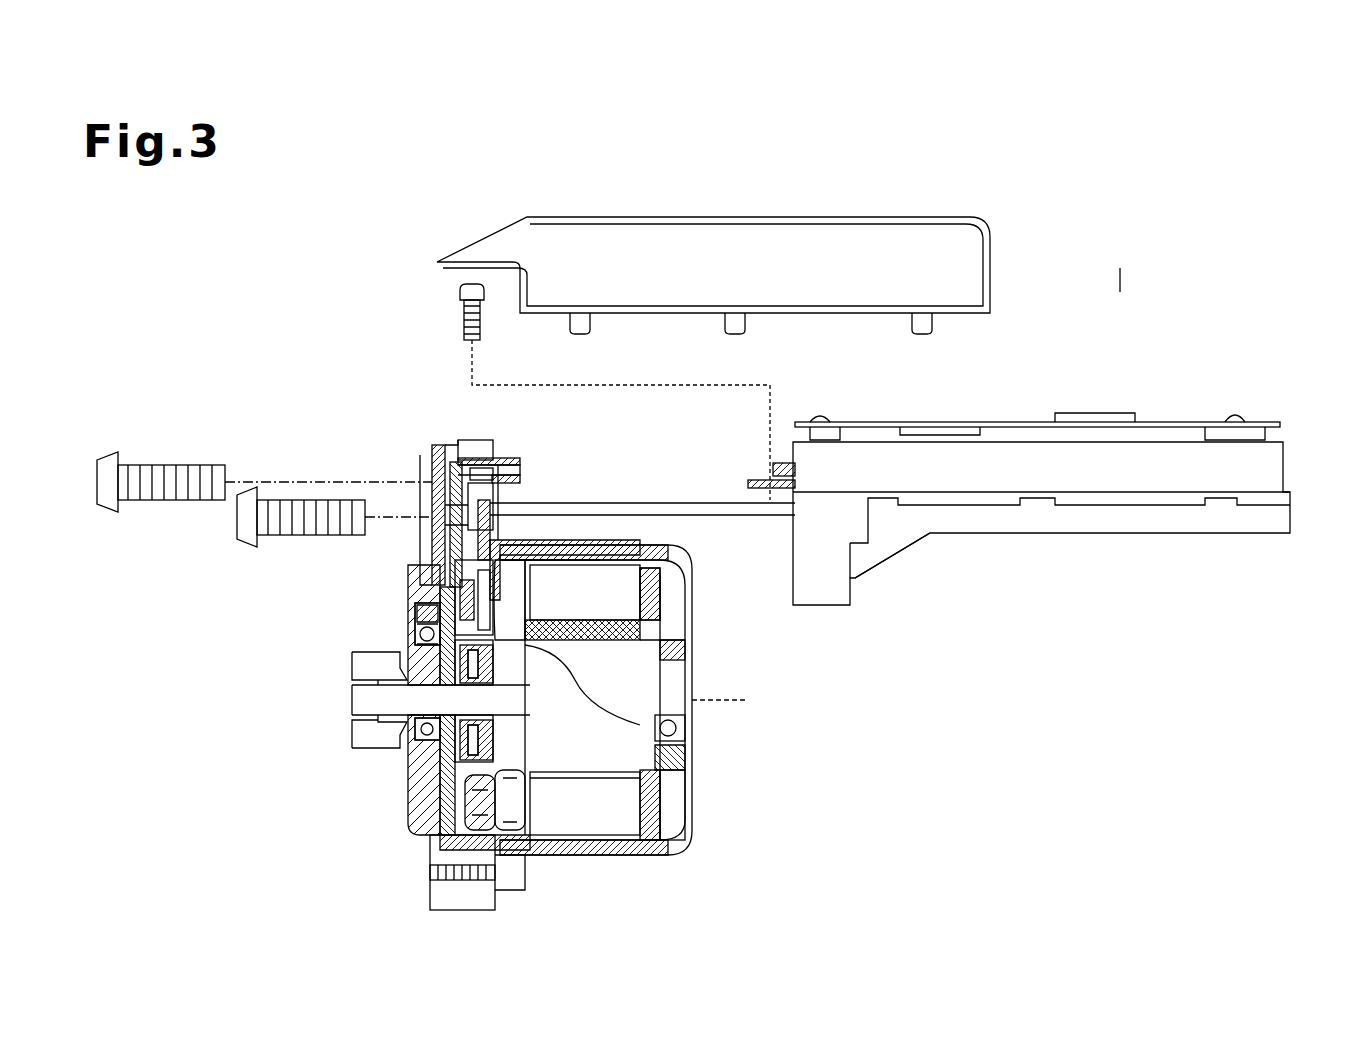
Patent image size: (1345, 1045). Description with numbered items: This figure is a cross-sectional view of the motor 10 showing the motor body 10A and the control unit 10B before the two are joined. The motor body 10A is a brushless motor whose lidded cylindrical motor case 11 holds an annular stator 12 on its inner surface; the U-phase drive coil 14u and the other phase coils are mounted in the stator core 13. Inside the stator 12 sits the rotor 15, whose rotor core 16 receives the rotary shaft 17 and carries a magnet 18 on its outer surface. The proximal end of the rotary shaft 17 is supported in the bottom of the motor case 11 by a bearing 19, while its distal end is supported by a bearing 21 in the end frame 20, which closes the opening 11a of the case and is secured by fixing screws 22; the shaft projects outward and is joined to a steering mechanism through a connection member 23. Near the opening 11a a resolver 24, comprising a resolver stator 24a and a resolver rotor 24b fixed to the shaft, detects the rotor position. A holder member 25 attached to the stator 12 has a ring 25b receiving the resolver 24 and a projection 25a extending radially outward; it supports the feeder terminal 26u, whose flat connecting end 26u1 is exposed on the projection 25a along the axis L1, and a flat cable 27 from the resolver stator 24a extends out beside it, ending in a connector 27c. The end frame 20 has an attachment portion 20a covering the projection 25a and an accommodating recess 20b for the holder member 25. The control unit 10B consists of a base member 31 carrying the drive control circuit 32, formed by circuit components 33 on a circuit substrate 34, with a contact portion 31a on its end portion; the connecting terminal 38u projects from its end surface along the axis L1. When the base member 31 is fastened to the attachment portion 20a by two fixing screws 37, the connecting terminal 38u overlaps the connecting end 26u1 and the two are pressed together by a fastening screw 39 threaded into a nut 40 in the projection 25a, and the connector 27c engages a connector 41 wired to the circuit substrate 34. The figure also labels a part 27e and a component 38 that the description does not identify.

The motor 10 is at (225, 298).
The motor body 10A is at (692, 580).
The control unit 10B is at (1139, 265).
The motor case 11 is at (612, 553).
The opening 11a is at (505, 546).
The stator 12 is at (600, 855).
The stator core 13 is at (575, 770).
The drive coil 14u is at (668, 795).
The rotor 15 is at (668, 760).
The rotor core 16 is at (665, 650).
The rotary shaft 17 is at (352, 710).
The magnet 18 is at (658, 632).
The bearing 19 is at (668, 720).
The end frame 20 is at (410, 790).
The attachment portion 20a is at (431, 455).
The accommodating recess 20b is at (431, 502).
The bearing 21 is at (395, 735).
The fixing screws 22 is at (526, 872).
The connection member 23 is at (350, 660).
The resolver 24 is at (330, 605).
The resolver stator 24a is at (415, 612).
The resolver rotor 24b is at (415, 636).
The holder member 25 is at (528, 575).
The projection 25a is at (495, 485).
The ring 25b is at (440, 820).
The feeder terminal 26u is at (432, 532).
The connecting end 26u1 is at (458, 440).
The flat cable 27 is at (510, 455).
The connector 27c is at (520, 458).
The terminal portion 27e is at (530, 461).
The base member 31 is at (1030, 533).
The contact portion 31a is at (900, 555).
The drive control circuit 32 is at (883, 420).
The circuit components 33 is at (962, 420).
The circuit substrate 34 is at (1190, 420).
The fixing screws 37 is at (162, 465).
The cover 38 is at (780, 213).
The connecting terminal 38u is at (752, 482).
The fastening screw 39 is at (462, 292).
The nut 40 is at (548, 503).
The connector 41 is at (775, 466).
The axis L1 is at (735, 692).